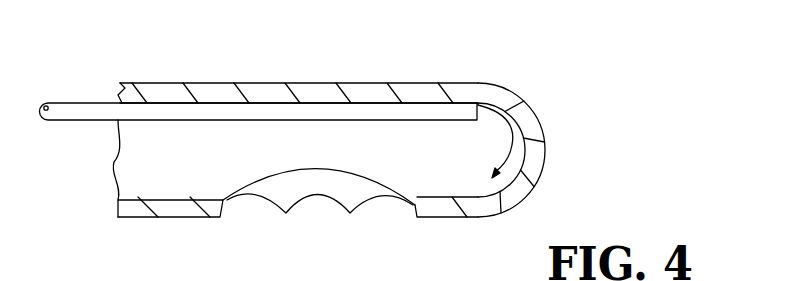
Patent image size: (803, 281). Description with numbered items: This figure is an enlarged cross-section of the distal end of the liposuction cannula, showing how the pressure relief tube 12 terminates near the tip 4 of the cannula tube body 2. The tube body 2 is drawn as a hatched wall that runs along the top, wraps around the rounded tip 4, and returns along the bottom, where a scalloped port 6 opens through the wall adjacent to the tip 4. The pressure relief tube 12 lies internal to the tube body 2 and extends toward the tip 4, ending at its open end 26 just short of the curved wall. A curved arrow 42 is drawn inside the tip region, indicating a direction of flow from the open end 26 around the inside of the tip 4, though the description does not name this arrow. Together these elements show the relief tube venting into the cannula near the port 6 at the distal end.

The cannula tube body 2 is at (351, 124).
The tip 4 is at (545, 155).
The port 6 is at (287, 230).
The pressure relief tube 12 is at (78, 102).
The open end 26 is at (480, 105).
The flow direction arrow 42 is at (510, 146).